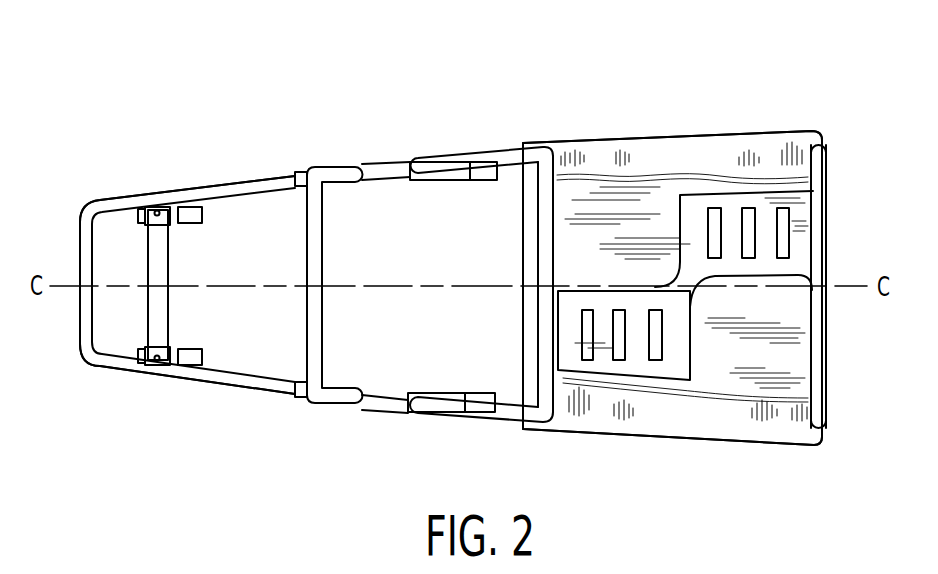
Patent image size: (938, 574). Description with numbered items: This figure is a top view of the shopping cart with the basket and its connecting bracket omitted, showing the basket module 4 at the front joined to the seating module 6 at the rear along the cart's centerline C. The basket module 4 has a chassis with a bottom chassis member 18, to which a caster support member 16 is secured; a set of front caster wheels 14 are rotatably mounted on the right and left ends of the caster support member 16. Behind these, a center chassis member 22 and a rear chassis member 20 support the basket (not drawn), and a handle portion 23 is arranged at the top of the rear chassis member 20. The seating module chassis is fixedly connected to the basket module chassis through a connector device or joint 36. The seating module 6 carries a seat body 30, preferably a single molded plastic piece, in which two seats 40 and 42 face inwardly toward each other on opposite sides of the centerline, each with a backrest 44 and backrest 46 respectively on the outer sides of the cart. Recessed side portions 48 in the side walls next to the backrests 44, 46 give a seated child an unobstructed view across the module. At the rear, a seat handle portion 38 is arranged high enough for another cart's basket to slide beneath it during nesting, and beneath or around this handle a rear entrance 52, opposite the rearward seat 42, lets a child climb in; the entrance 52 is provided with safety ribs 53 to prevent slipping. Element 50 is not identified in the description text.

The basket module 4 is at (278, 147).
The seating module 6 is at (684, 70).
The front caster wheels 14 is at (202, 212).
The caster support member 16 is at (170, 300).
The bottom chassis member 18 is at (215, 187).
The rear chassis member 20 is at (493, 153).
The center chassis member 22 is at (322, 257).
The handle portion 23 is at (523, 257).
The seat body 30 is at (800, 137).
The connector device or joint 36 is at (467, 180).
The seat handle portion 38 is at (820, 328).
The seat 40 is at (627, 188).
The seat 42 is at (798, 358).
The backrest 44 is at (592, 153).
The backrest 46 is at (772, 427).
The recessed side portions 48 is at (732, 142).
The upper vent slots panel 50 is at (805, 202).
The rear entrance 52 is at (847, 220).
The safety ribs 53 is at (640, 358).